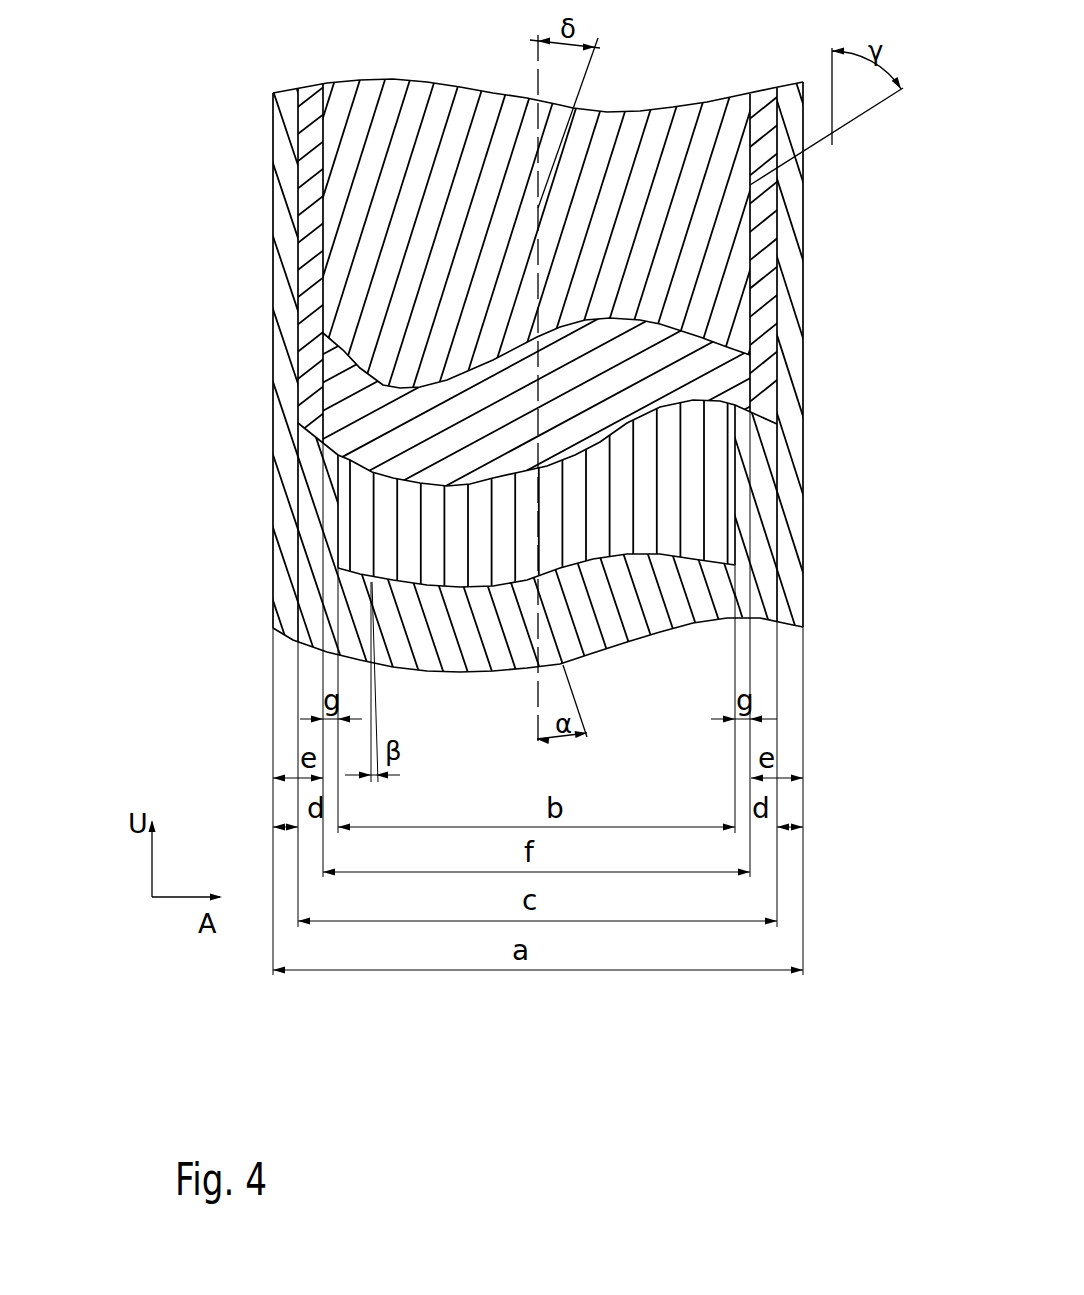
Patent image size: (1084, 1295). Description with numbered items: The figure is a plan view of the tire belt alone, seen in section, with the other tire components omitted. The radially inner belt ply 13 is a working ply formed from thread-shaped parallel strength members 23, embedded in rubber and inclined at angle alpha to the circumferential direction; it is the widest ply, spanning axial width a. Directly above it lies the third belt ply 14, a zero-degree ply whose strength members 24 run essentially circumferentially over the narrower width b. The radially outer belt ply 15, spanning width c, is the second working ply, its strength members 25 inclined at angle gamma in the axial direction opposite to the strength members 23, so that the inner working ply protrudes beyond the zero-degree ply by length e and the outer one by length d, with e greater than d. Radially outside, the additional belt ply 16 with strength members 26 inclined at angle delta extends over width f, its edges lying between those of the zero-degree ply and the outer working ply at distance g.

The radially inner belt ply 13 is at (790, 340).
The third belt ply 14 is at (712, 523).
The radially outer belt ply 15 is at (760, 297).
The additional belt ply 16 is at (703, 205).
The strength members 23 is at (305, 565).
The strength members 24 is at (390, 525).
The strength members 25 is at (313, 290).
The strength members 26 is at (380, 173).